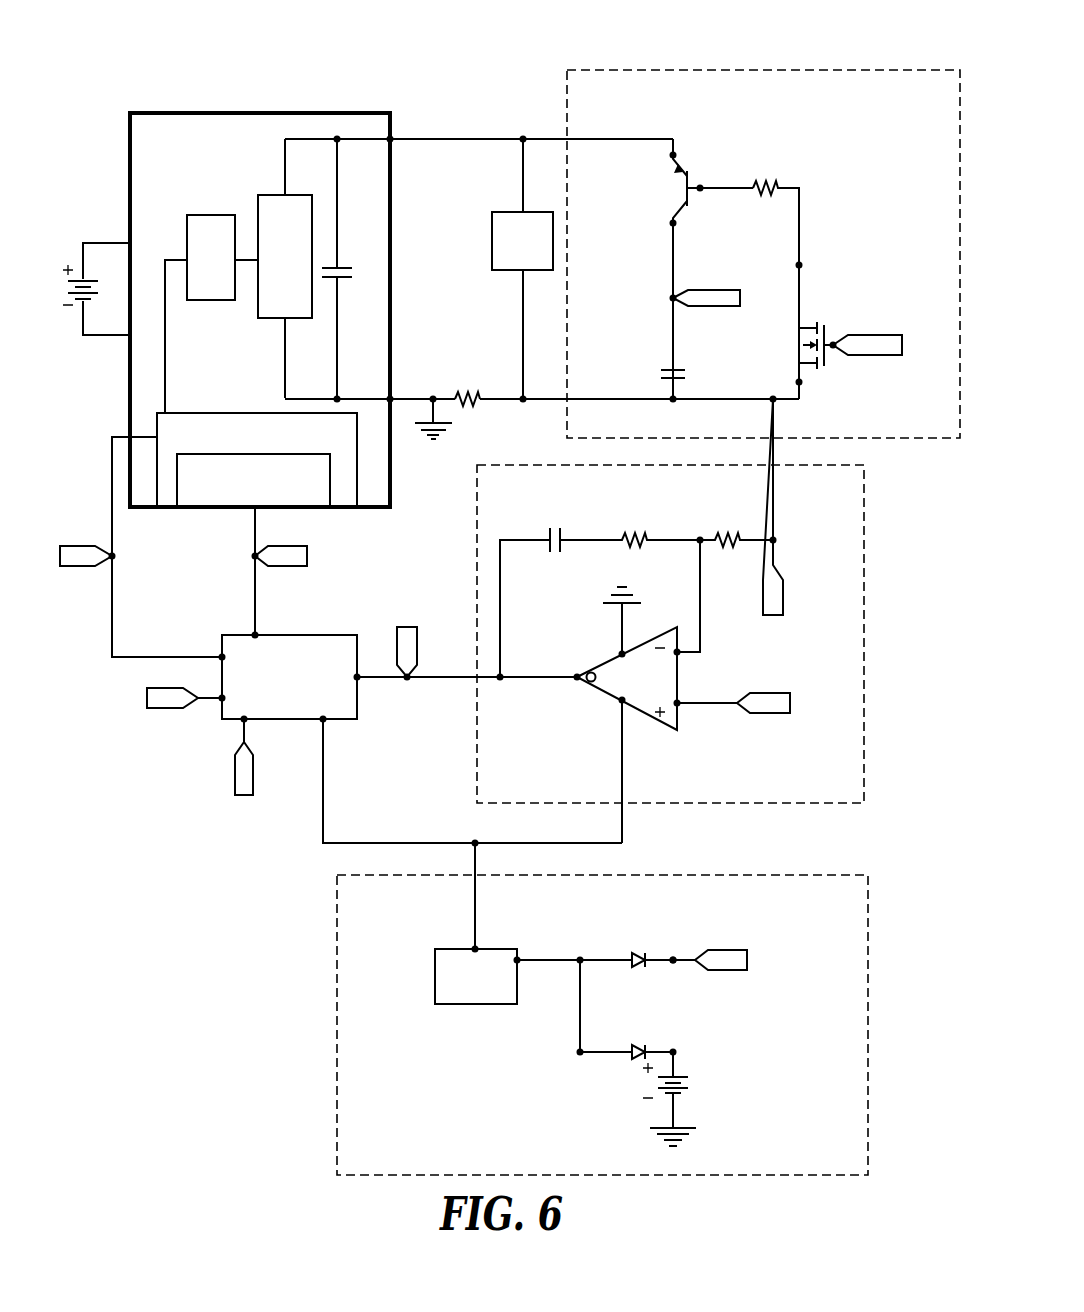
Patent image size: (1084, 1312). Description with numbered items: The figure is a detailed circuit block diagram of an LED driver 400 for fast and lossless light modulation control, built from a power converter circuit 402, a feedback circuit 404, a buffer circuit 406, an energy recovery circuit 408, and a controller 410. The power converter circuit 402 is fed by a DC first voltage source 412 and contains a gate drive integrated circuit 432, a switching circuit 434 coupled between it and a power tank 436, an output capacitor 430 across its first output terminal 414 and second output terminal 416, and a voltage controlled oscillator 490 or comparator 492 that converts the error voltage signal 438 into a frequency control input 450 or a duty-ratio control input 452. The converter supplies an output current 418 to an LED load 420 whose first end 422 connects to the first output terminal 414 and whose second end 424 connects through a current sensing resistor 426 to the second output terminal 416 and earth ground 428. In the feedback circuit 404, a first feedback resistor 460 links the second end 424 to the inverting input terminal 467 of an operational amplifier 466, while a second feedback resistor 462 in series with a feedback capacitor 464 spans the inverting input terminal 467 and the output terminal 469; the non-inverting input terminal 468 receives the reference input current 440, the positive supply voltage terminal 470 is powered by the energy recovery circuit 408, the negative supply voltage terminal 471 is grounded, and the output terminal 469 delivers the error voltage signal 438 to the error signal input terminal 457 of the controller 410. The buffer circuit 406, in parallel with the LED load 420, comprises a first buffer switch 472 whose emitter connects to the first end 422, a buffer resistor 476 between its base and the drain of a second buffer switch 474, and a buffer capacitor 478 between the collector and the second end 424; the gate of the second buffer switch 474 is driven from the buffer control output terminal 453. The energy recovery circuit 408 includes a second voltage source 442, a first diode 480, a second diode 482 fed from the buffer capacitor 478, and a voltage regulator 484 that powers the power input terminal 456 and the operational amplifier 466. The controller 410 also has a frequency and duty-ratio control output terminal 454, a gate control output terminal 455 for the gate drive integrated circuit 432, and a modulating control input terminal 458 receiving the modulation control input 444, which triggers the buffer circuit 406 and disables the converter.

The LED driver 400 is at (725, 42).
The power converter circuit 402 is at (262, 113).
The feedback circuit 404 is at (866, 697).
The buffer circuit 406 is at (793, 68).
The energy recovery circuit 408 is at (870, 1048).
The controller 410 is at (332, 642).
The first voltage source 412 is at (83, 279).
The first output terminal 414 is at (390, 139).
The second output terminal 416 is at (390, 399).
The output current 418 is at (775, 592).
The LED load 420 is at (522, 241).
The first end 422 is at (523, 139).
The second end 424 is at (523, 399).
The current sensing resistor 426 is at (468, 399).
The earth ground 428 is at (433, 440).
The output capacitor 430 is at (340, 268).
The gate drive integrated circuit 432 is at (257, 460).
The switching circuit 434 is at (211, 314).
The power tank 436 is at (285, 268).
The error voltage signal 438 is at (407, 627).
The reference input current 440 is at (775, 695).
The second voltage source 442 is at (682, 1088).
The modulation control input 444 is at (244, 796).
The frequency control input 450 is at (335, 538).
The duty-ratio control input 452 is at (300, 556).
The buffer control output terminal 453 is at (222, 698).
The frequency and duty-ratio control output terminal 454 is at (255, 635).
The gate control output terminal 455 is at (222, 657).
The power input terminal 456 is at (323, 719).
The error signal input terminal 457 is at (357, 677).
The modulating control input terminal 458 is at (244, 719).
The first feedback resistor 460 is at (727, 540).
The second feedback resistor 462 is at (633, 540).
The feedback capacitor 464 is at (550, 540).
The operational amplifier 466 is at (635, 691).
The inverting input terminal 467 is at (677, 652).
The non-inverting input terminal 468 is at (677, 703).
The output terminal 469 is at (577, 677).
The positive supply voltage terminal 470 is at (622, 700).
The negative supply voltage terminal 471 is at (622, 654).
The first buffer switch 472 is at (687, 188).
The second buffer switch 474 is at (799, 363).
The buffer resistor 476 is at (775, 188).
The buffer capacitor 478 is at (680, 370).
The first diode 480 is at (640, 1046).
The second diode 482 is at (638, 955).
The voltage regulator 484 is at (494, 942).
The voltage controlled oscillator 490 is at (253, 480).
The comparator 492 is at (253, 480).